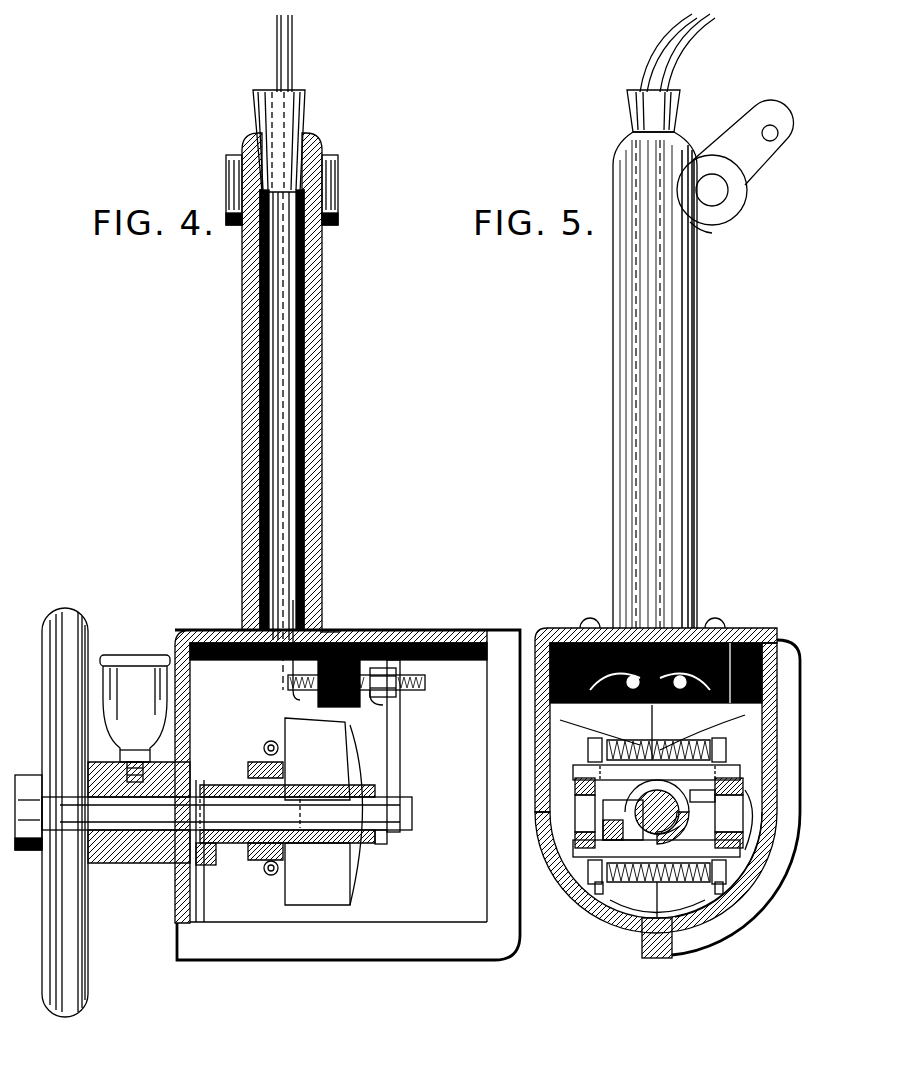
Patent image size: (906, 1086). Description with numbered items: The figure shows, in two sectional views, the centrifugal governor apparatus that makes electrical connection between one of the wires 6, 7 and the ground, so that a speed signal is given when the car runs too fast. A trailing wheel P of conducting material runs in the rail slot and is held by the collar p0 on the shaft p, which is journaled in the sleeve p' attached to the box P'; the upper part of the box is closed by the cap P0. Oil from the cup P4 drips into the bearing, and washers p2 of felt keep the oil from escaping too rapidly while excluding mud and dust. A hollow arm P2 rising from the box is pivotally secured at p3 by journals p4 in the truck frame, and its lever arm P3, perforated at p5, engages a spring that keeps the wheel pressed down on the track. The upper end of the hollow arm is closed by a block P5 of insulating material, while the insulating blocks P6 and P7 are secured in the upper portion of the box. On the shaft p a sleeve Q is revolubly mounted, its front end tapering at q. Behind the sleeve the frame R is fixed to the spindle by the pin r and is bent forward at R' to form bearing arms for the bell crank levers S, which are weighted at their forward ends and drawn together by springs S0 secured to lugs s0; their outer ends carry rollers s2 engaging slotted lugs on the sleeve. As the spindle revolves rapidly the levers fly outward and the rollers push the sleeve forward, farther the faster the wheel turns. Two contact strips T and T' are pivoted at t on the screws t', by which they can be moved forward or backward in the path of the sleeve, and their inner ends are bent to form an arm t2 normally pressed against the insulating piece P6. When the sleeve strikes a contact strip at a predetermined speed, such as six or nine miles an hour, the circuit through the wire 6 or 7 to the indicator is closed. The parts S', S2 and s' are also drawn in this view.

In FIG. 4, the wire 6 is at (292, 42).
In FIG. 5, the wire 6 is at (672, 28).
In FIG. 4, the wire 7 is at (276, 42).
In FIG. 5, the wire 7 is at (690, 38).
In FIG. 4, the trailing wheel P is at (77, 796).
In FIG. 4, the box P' is at (347, 816).
In FIG. 5, the box P' is at (656, 809).
In FIG. 5, the cap P0 is at (790, 890).
In FIG. 4, the hollow arm P2 is at (322, 385).
In FIG. 5, the hollow arm P2 is at (673, 380).
In FIG. 5, the lever arm P3 is at (760, 180).
In FIG. 4, the cup P4 is at (130, 690).
In FIG. 4, the block of insulating material P5 is at (305, 100).
In FIG. 5, the block of insulating material P5 is at (630, 96).
In FIG. 4, the block of insulating material P6 is at (380, 645).
In FIG. 5, the block of insulating material P6 is at (733, 628).
In FIG. 4, the block of insulating material P7 is at (335, 640).
In FIG. 5, the block of insulating material P7 is at (800, 655).
In FIG. 4, the shaft p is at (243, 846).
In FIG. 5, the shaft p is at (714, 808).
In FIG. 4, the collar p0 is at (24, 852).
In FIG. 4, the sleeve p' is at (248, 854).
In FIG. 4, the washers p2 is at (110, 862).
In FIG. 4, the pivot p3 is at (230, 190).
In FIG. 5, the pivot p3 is at (722, 226).
In FIG. 5, the journals p4 is at (712, 185).
In FIG. 5, the perforation p5 is at (770, 126).
In FIG. 4, the bell crank levers S is at (317, 811).
In FIG. 5, the bell crank levers S is at (668, 938).
In FIG. 5, the magnet plate S' is at (656, 808).
In FIG. 4, the springs S0 is at (266, 742).
In FIG. 5, the springs S0 is at (575, 920).
In FIG. 5, the magnet core S2 is at (623, 810).
In FIG. 4, the spacer block s' is at (249, 816).
In FIG. 5, the spacer block s' is at (701, 816).
In FIG. 5, the lugs s0 is at (595, 890).
In FIG. 5, the rollers or cylindrical pins s2 is at (666, 801).
In FIG. 4, the contact strip T is at (415, 746).
In FIG. 5, the contact strip T is at (592, 726).
In FIG. 5, the contact strip T' is at (702, 726).
In FIG. 4, the pivot t is at (396, 708).
In FIG. 4, the screws t' is at (416, 686).
In FIG. 5, the screws t' is at (617, 731).
In FIG. 4, the arm t2 is at (425, 683).
In FIG. 4, the sleeve Q is at (358, 800).
In FIG. 5, the sleeve Q is at (700, 820).
In FIG. 4, the tapering front end q is at (382, 843).
In FIG. 4, the frame R is at (191, 886).
In FIG. 5, the bearing arms R' is at (679, 853).
In FIG. 4, the pin r is at (206, 865).